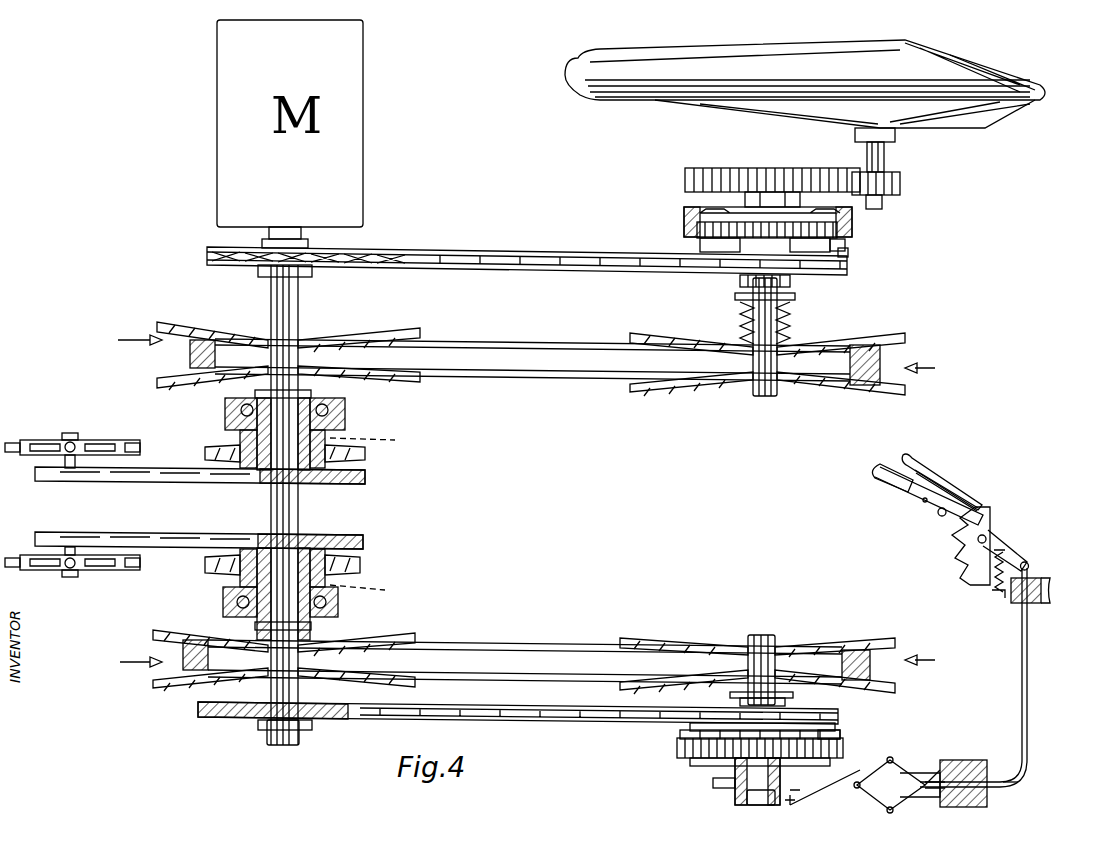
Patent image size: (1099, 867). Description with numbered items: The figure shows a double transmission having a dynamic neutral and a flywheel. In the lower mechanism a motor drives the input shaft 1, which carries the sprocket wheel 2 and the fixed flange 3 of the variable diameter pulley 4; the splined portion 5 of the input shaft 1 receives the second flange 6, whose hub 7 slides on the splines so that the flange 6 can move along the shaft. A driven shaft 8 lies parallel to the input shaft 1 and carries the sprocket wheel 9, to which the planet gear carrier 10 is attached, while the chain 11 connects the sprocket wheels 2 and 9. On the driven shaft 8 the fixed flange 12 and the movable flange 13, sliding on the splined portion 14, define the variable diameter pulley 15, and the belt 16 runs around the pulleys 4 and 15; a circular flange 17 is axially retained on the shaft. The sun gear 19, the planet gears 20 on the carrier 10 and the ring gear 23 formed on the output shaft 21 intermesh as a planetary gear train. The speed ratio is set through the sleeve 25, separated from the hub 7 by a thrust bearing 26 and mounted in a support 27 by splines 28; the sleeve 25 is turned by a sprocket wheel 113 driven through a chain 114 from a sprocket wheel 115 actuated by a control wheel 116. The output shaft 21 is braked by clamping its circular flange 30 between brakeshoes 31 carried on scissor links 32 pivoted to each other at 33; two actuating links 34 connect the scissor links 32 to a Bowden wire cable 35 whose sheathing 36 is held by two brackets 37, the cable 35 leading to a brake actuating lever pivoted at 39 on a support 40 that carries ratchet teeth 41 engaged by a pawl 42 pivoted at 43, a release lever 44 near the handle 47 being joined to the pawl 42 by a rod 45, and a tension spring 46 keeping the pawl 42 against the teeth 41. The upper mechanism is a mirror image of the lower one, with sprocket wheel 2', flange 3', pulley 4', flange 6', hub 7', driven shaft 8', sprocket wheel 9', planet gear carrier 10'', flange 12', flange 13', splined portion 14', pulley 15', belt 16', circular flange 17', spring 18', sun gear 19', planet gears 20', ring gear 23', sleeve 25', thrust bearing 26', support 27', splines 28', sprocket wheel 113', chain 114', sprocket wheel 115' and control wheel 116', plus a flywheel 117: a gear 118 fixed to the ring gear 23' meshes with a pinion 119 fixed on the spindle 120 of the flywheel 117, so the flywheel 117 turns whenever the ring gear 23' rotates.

The input shaft 1 is at (271, 315).
The sprocket wheel 2 is at (518, 727).
The sprocket wheel 2' is at (527, 235).
The flange 3 is at (496, 679).
The flange 3' is at (503, 339).
The variable diameter pulley 4 is at (136, 662).
The variable diameter pulley 4' is at (125, 337).
The splined portion 5 is at (298, 512).
The second flange 6 is at (223, 615).
The second flange 6' is at (235, 402).
The hub 7 is at (255, 594).
The hub 7' is at (255, 434).
The driven shaft 8 is at (730, 781).
The driven shaft 8' is at (733, 220).
The sprocket wheel 9 is at (786, 725).
The sprocket wheel 9' is at (725, 292).
The planet gear carrier 10 is at (868, 736).
The planet gear carrier 10'' is at (874, 258).
The chain 11 is at (515, 720).
The flange 12 is at (757, 626).
The flange 12' is at (767, 399).
The flange 13 is at (725, 687).
The flange 13' is at (772, 334).
The splined portion 14 is at (761, 643).
The splined portion 14' is at (779, 353).
The variable diameter pulley 15 is at (923, 659).
The variable diameter pulley 15' is at (938, 366).
The belt 16 is at (491, 650).
The belt 16' is at (539, 357).
The circular flange 17 is at (836, 710).
The circular flange 17' is at (805, 289).
The spring 18' is at (802, 323).
The sun gear 19 is at (772, 732).
The sun gear 19' is at (731, 240).
The planet gears 20 is at (717, 732).
The planet gears 20' is at (872, 240).
The output shaft 21 is at (747, 800).
The ring gear 23 is at (732, 746).
The ring gear 23' is at (808, 222).
The sleeve portion 25 is at (310, 602).
The sleeve portion 25' is at (320, 414).
The thrust bearing 26 is at (318, 615).
The thrust bearing 26' is at (333, 400).
The support 27 is at (305, 569).
The support 27' is at (324, 454).
The splines 28 is at (368, 590).
The splines 28' is at (378, 438).
The circular flange 30 is at (713, 782).
The brakeshoes 31 is at (840, 780).
The scissor links 32 is at (889, 785).
The pivot 33 is at (920, 785).
The actuating links 34 is at (940, 775).
The Bowden wire cable 35 is at (1027, 705).
The sheathing 36 is at (1027, 650).
The brackets 37 is at (1027, 620).
The pivot 39 is at (988, 538).
The support 40 is at (965, 580).
The ratchet teeth 41 is at (952, 550).
The pawl 42 is at (990, 515).
The pivot 43 is at (940, 510).
The release lever 44 is at (920, 456).
The rod 45 is at (940, 470).
The tension spring 46 is at (995, 592).
The handle 47 is at (877, 470).
The sprocket wheel 113 is at (241, 549).
The sprocket wheel 113' is at (251, 473).
The chain 114 is at (142, 536).
The chain 114' is at (113, 468).
The sprocket wheel 115 is at (84, 525).
The sprocket wheel 115' is at (37, 479).
The control wheel 116 is at (72, 589).
The control wheel 116' is at (72, 419).
The flywheel 117 is at (630, 60).
The gear 118 is at (745, 168).
The pinion 119 is at (900, 182).
The spindle 120 is at (867, 150).